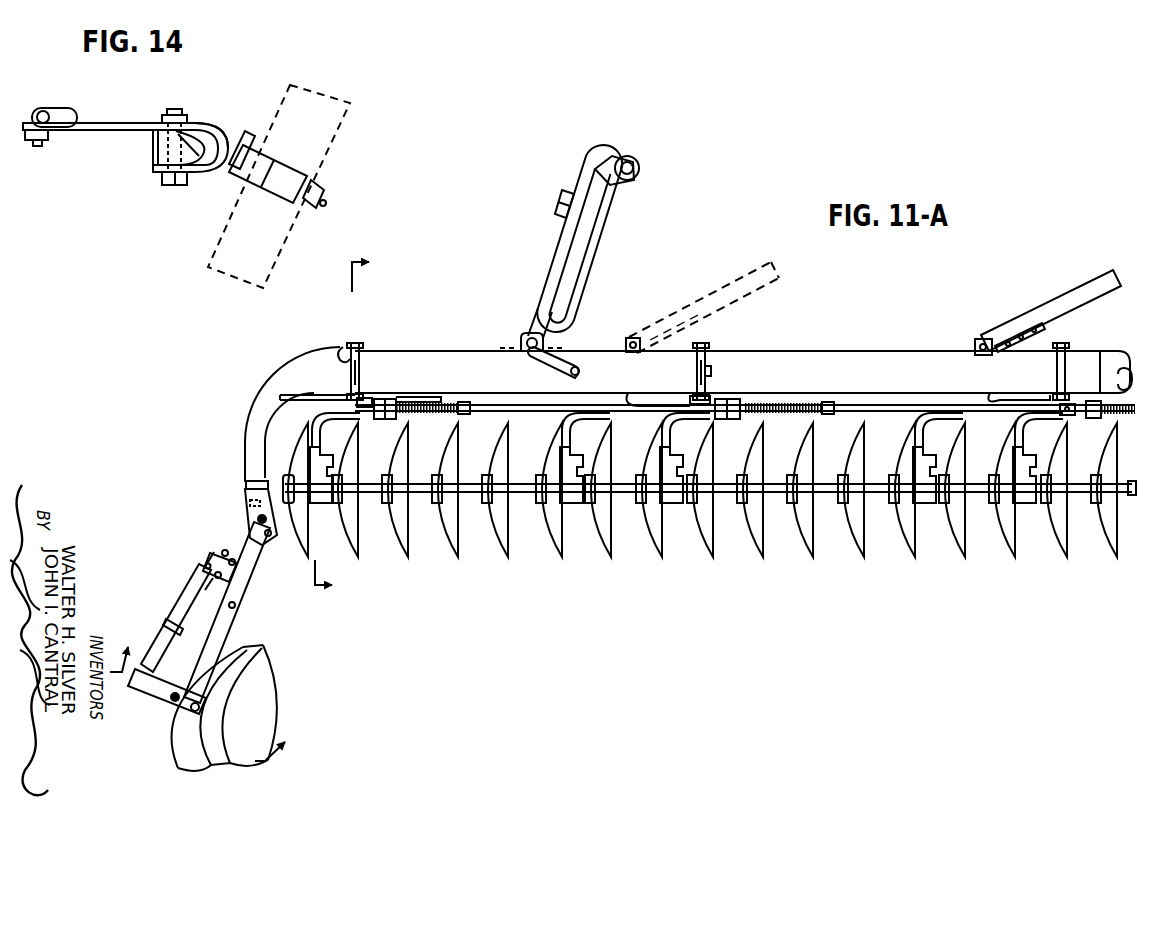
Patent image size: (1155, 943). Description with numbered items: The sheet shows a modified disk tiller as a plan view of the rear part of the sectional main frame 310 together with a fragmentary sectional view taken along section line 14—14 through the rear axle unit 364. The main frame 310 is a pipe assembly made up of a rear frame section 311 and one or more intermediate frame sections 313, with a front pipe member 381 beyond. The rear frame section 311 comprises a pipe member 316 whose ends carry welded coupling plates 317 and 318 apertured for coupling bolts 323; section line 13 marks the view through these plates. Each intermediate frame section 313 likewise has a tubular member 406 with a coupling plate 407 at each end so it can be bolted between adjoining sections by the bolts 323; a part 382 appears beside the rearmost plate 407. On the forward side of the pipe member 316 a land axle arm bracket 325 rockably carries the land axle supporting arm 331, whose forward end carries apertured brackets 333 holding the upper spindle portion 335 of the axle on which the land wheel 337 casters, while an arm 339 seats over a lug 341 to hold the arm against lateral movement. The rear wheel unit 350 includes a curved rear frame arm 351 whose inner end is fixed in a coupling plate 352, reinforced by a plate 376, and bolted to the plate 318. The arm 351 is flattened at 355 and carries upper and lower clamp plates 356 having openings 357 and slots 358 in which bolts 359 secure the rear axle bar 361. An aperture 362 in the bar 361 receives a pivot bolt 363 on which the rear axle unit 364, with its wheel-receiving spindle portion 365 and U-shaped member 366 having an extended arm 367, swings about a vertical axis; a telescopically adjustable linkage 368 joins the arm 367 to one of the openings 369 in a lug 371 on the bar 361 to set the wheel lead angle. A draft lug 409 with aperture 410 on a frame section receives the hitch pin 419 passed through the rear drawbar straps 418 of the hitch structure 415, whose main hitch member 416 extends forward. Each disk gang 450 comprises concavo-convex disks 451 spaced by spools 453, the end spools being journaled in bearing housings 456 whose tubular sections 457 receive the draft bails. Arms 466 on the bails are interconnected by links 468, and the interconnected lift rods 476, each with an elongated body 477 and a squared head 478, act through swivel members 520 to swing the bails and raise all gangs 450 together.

In FIG. 11A, the main frame 310 is at (786, 349).
In FIG. 11A, the rear frame section 311 is at (448, 349).
In FIG. 11A, the intermediate frame section 313 is at (870, 349).
In FIG. 11A, the pipe member 316 is at (405, 352).
In FIG. 11A, the coupling plate 317 is at (698, 381).
In FIG. 11A, the coupling plate 318 is at (361, 374).
In FIG. 11A, the coupling bolts 323 is at (352, 343).
In FIG. 11A, the land axle arm bracket 325 is at (517, 346).
In FIG. 11A, the land axle supporting arm 331 is at (571, 257).
In FIG. 11A, the apertured brackets 333 is at (630, 189).
In FIG. 11A, the upper spindle portion 335 is at (639, 165).
In FIG. 11A, the land wheel 337 is at (547, 288).
In FIG. 11A, the arm 339 is at (562, 358).
In FIG. 11A, the lug 341 is at (571, 374).
In FIG. 11A, the rear wheel unit 350 is at (226, 559).
In FIG. 11A, the rear frame arm 351 is at (265, 403).
In FIG. 11A, the coupling plate 352 is at (340, 357).
In FIG. 11A, the flattened portion 355 is at (248, 486).
In FIG. 11A, the clamp plates 356 is at (251, 502).
In FIG. 11A, the openings 357 is at (222, 554).
In FIG. 11A, the slots 358 is at (268, 538).
In FIG. 11A, the bolts 359 is at (257, 519).
In FIG. 14, the rear axle bar 361 is at (163, 152).
In FIG. 11A, the rear axle bar 361 is at (238, 597).
In FIG. 14, the aperture 362 is at (200, 126).
In FIG. 14, the pivot bolt 363 is at (176, 108).
In FIG. 11A, the pivot bolt 363 is at (175, 703).
In FIG. 14, the rear axle unit 364 is at (235, 185).
In FIG. 14, the wheel-receiving spindle portions 365 is at (286, 183).
In FIG. 14, the U-shaped member 366 is at (128, 121).
In FIG. 14, the arm section 367 is at (97, 131).
In FIG. 11A, the arm section 367 is at (165, 690).
In FIG. 14, the telescopically adjustable linkage 368 is at (63, 106).
In FIG. 11A, the telescopically adjustable linkage 368 is at (171, 627).
In FIG. 11A, the openings 369 is at (215, 575).
In FIG. 11A, the lug 371 is at (210, 582).
In FIG. 11A, the reinforcing plate 376 is at (300, 392).
In FIG. 11A, the front pipe member 381 is at (1110, 362).
In FIG. 11A, the end plate 382 is at (1064, 354).
In FIG. 11A, the tubular member 406 is at (905, 360).
In FIG. 11A, the coupling plate 407 is at (711, 371).
In FIG. 11A, the draft bar receiving lug 409 is at (633, 338).
In FIG. 11A, the aperture 410 is at (643, 336).
In FIG. 11A, the hitch structure 415 is at (1091, 283).
In FIG. 11A, the main hitch member 416 is at (727, 292).
In FIG. 11A, the drawbar straps 418 is at (1017, 325).
In FIG. 11A, the hitch pin 419 is at (978, 356).
In FIG. 11A, the disk gang 450 is at (709, 516).
In FIG. 11A, the concavo-convex disks 451 is at (505, 548).
In FIG. 11A, the spools 453 is at (428, 494).
In FIG. 11A, the bearing housings 456 is at (324, 504).
In FIG. 11A, the tubular section 457 is at (563, 455).
In FIG. 11A, the arm 466 is at (414, 397).
In FIG. 11A, the link 468 is at (660, 396).
In FIG. 11A, the lift rod 476 is at (486, 414).
In FIG. 11A, the elongated body portion 477 is at (497, 404).
In FIG. 11A, the squared head portion 478 is at (366, 399).
In FIG. 11A, the swivel member 520 is at (384, 419).
In FIG. 11A, the section line 13 is at (353, 422).
In FIG. 11A, the section line 14— 14 is at (207, 692).